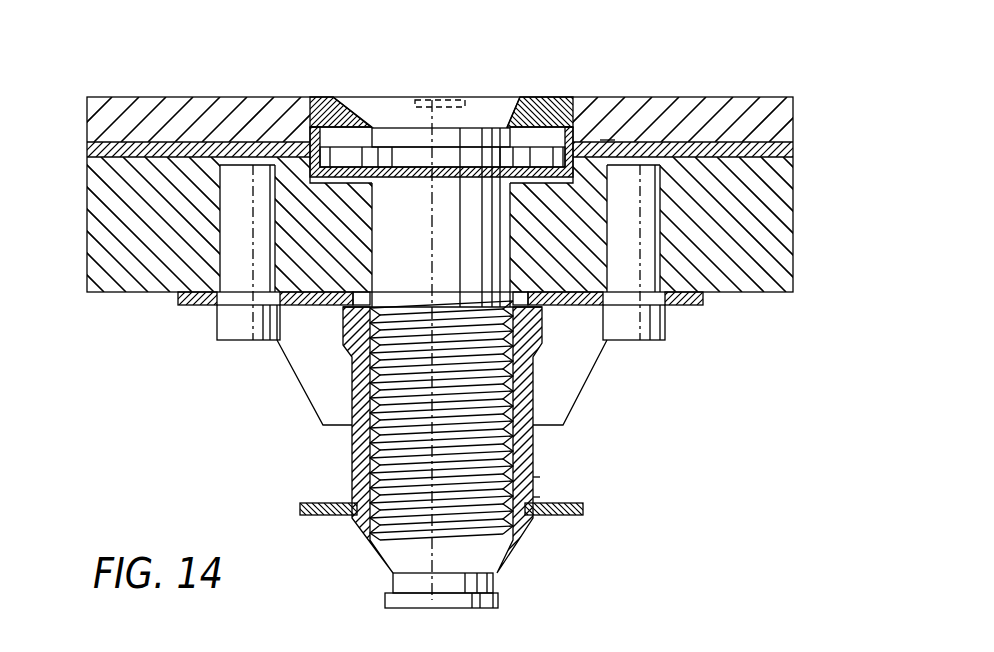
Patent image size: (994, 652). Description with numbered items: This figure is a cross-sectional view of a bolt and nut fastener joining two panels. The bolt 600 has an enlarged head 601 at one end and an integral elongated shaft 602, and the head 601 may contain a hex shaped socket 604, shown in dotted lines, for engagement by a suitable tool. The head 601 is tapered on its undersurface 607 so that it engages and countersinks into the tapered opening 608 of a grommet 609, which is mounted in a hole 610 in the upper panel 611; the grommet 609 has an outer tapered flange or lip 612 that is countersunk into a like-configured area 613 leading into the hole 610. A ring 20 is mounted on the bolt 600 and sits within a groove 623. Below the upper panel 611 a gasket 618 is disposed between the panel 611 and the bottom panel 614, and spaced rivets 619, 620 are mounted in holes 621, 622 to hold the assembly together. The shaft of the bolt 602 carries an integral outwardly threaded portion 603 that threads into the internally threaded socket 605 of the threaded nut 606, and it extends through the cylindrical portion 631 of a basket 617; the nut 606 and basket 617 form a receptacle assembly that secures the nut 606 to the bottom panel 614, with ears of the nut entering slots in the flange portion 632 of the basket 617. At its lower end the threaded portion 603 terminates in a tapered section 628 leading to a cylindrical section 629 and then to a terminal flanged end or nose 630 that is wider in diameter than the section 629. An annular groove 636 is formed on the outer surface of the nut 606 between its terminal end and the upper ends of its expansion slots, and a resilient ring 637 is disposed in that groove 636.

The panel 611 is at (165, 100).
The gasket 618 is at (87, 150).
The bottom panel 614 is at (113, 293).
The rivet 619 is at (220, 250).
The rivet 620 is at (648, 215).
The countersunk area 613 is at (290, 112).
The outer tapered flange or lip 612 is at (312, 112).
The grommet 609 is at (568, 140).
The hole 610 is at (321, 112).
The enlarged head 601 is at (393, 108).
The hex shaped socket 604 is at (455, 100).
The undersurface 607 is at (330, 115).
The tapered opening 608 is at (517, 105).
The groove 623 is at (553, 145).
The bolt 600 is at (578, 62).
The ring 20 is at (615, 140).
The elongated shaft 602 is at (417, 227).
The flange portion 632 is at (197, 305).
The hole 621 is at (245, 320).
The hole 622 is at (665, 330).
The cylindrical portion 631 is at (515, 365).
The basket 617 is at (632, 395).
The threaded portion 603 is at (355, 432).
The internally threaded socket 605 is at (535, 478).
The threaded nut 606 is at (535, 498).
The annular groove 636 is at (340, 515).
The resilient ring 637 is at (560, 515).
The cylindrical section 629 is at (400, 583).
The terminal flanged end or nose 630 is at (405, 608).
The tapered section 628 is at (488, 548).